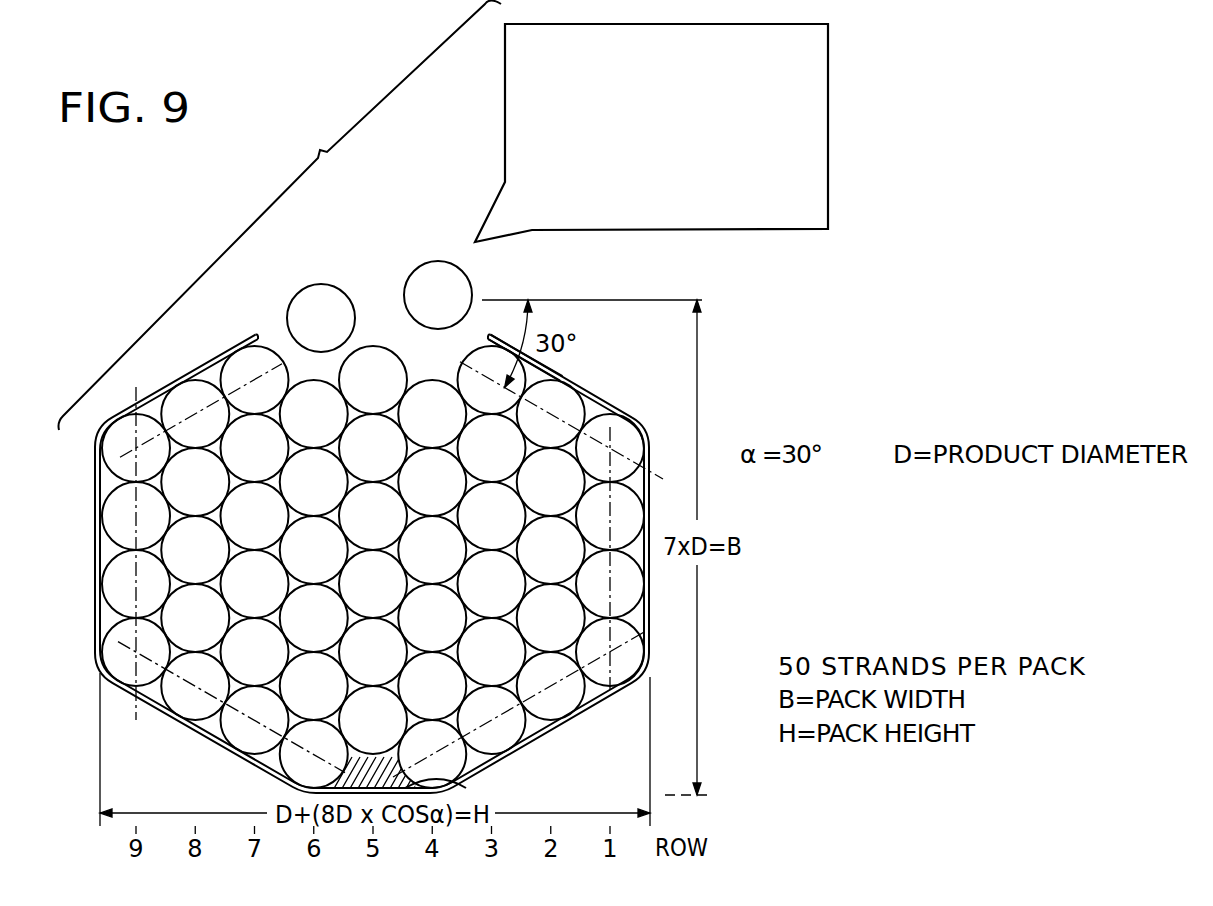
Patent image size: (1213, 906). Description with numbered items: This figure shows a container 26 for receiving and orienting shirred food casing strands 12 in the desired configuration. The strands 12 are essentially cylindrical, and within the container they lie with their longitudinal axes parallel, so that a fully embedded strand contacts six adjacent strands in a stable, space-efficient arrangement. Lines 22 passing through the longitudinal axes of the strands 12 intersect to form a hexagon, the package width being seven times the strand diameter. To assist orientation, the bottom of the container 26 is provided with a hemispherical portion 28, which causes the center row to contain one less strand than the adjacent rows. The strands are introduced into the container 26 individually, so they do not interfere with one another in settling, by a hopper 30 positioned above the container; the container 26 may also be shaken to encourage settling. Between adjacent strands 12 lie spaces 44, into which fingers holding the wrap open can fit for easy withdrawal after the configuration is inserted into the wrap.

The shirred food casing strand 12 is at (344, 524).
The lines passing through the longitudinal axes of strands 22 is at (130, 533).
The container 26 is at (95, 615).
The hemispherical portion 28 is at (462, 785).
The hopper 30 is at (820, 182).
The spaces between strands 44 is at (596, 404).